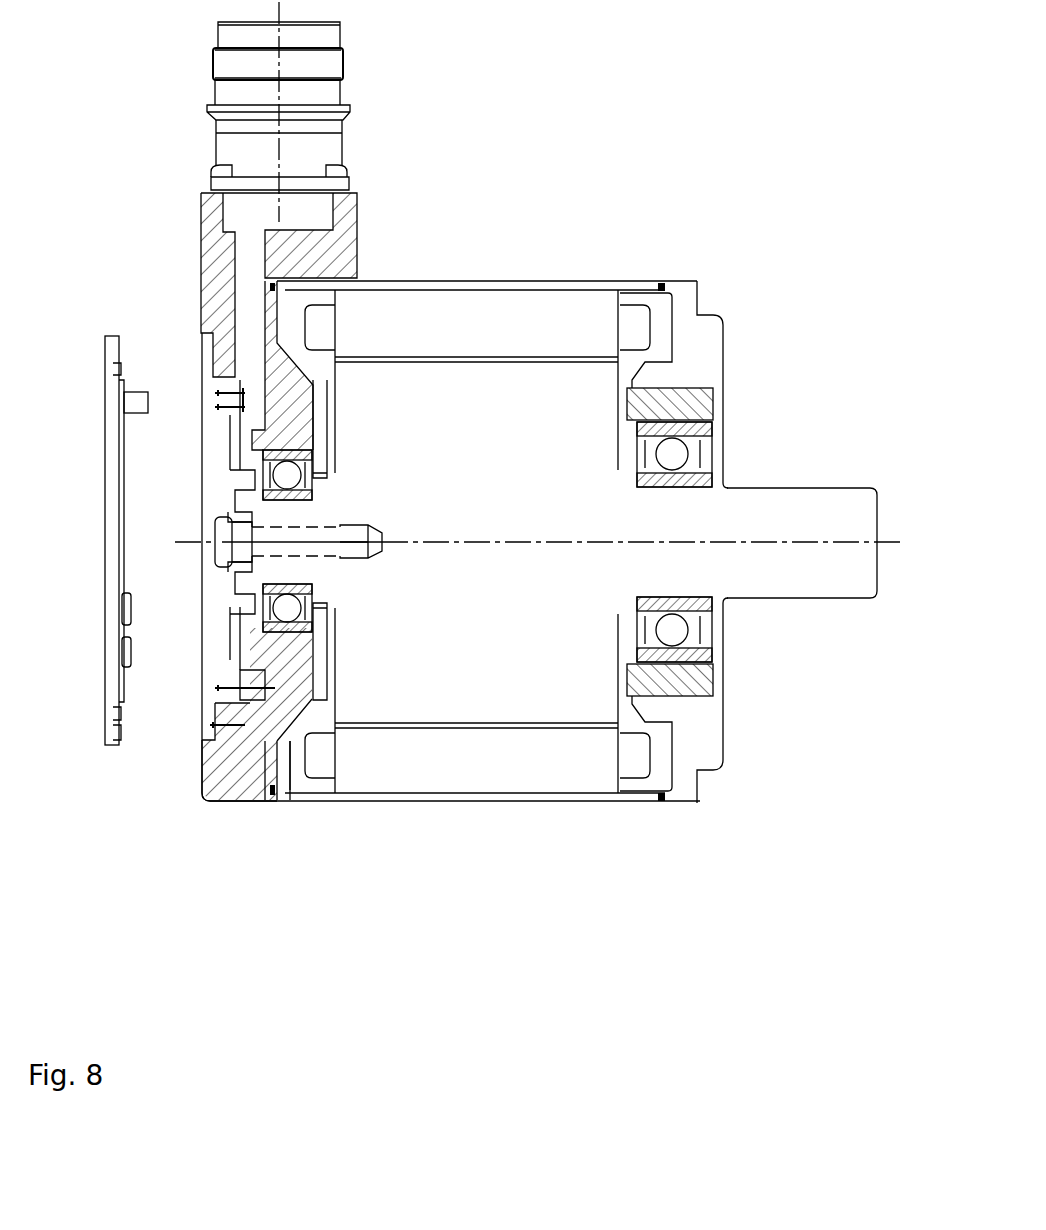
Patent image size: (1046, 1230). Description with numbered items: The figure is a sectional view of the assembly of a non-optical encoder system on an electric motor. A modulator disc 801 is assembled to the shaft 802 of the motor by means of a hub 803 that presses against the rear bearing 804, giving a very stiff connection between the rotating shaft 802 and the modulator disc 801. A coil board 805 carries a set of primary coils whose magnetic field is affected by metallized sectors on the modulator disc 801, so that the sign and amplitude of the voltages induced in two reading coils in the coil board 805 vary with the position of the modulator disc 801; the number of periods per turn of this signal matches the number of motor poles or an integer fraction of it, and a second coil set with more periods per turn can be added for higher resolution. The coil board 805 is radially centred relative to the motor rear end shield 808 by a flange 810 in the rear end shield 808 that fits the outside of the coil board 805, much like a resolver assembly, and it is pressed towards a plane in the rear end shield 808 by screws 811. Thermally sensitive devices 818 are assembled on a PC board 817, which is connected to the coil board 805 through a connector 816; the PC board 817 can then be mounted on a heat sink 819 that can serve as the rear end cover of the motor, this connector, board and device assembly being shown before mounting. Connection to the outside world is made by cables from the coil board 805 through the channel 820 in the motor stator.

The modulator disc 801 is at (250, 412).
The shaft 802 is at (337, 580).
The hub 803 is at (340, 610).
The rear bearing 804 is at (300, 458).
The coil board 805 is at (333, 733).
The motor rear end shield 808 is at (203, 795).
The flange 810 is at (267, 800).
The screws 811 is at (295, 800).
The connector 816 is at (247, 393).
The PC board 817 is at (120, 583).
The thermally sensitive devices 818 is at (120, 660).
The heat sink 819 is at (114, 500).
The channel 820 is at (242, 283).